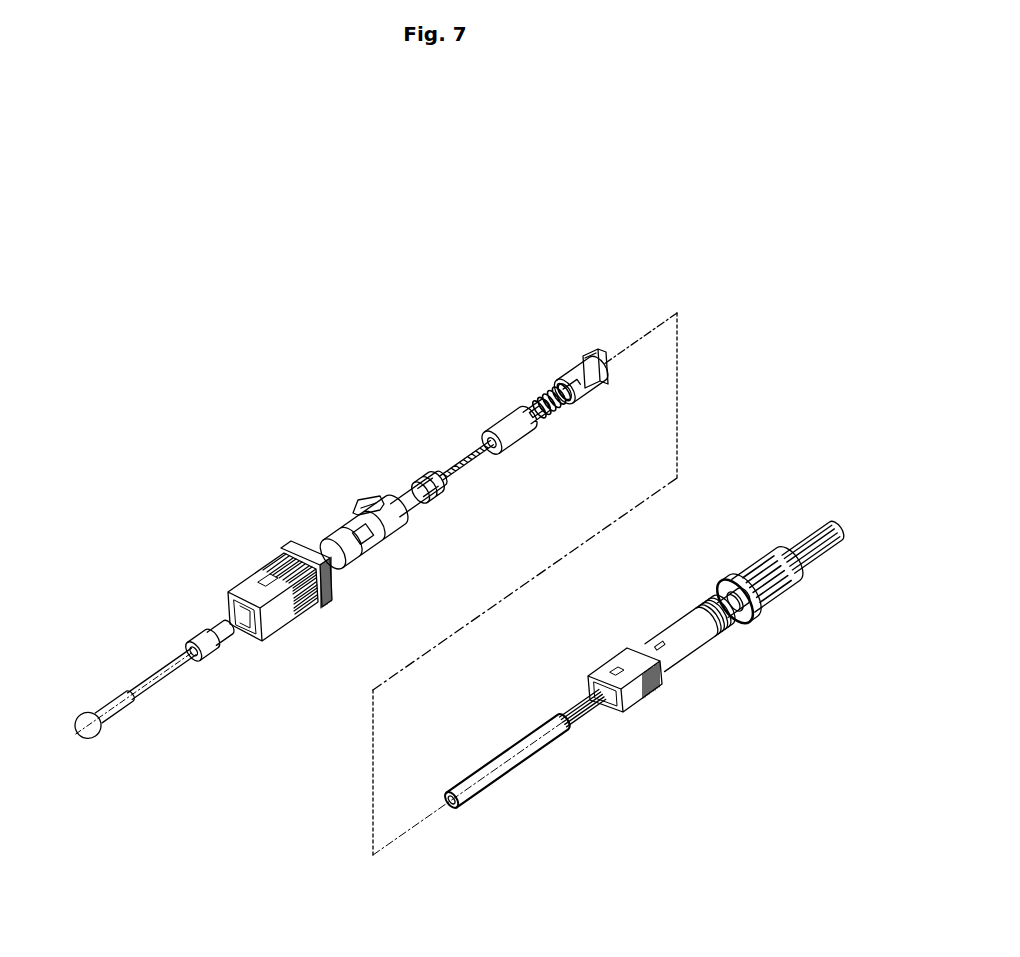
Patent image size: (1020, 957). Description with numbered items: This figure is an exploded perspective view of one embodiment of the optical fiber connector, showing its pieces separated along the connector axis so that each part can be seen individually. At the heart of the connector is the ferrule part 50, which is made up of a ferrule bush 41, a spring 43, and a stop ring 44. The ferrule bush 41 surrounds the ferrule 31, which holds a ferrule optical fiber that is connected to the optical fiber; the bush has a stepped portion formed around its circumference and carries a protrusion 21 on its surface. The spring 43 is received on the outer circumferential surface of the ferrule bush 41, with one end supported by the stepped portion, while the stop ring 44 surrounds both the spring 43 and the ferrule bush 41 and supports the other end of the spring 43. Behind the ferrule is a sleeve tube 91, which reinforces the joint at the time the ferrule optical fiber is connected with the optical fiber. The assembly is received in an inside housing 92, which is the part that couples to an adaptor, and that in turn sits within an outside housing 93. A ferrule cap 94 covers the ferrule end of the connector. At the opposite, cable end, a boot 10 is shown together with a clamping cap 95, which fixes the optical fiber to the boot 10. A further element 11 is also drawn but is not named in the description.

The ferrule part 50 is at (290, 290).
The stop ring 44 is at (592, 347).
The spring 43 is at (542, 392).
The ferrule bush 41 is at (503, 420).
The protrusion 21 is at (532, 402).
The ferrule 31 is at (420, 478).
The inside housing 92 is at (352, 503).
The outside housing 93 is at (270, 562).
The ferrule cap 94 is at (147, 677).
The sleeve tube 91 is at (506, 778).
The plug frame 11 is at (623, 707).
The boot 10 is at (684, 670).
The clamping cap 95 is at (771, 609).